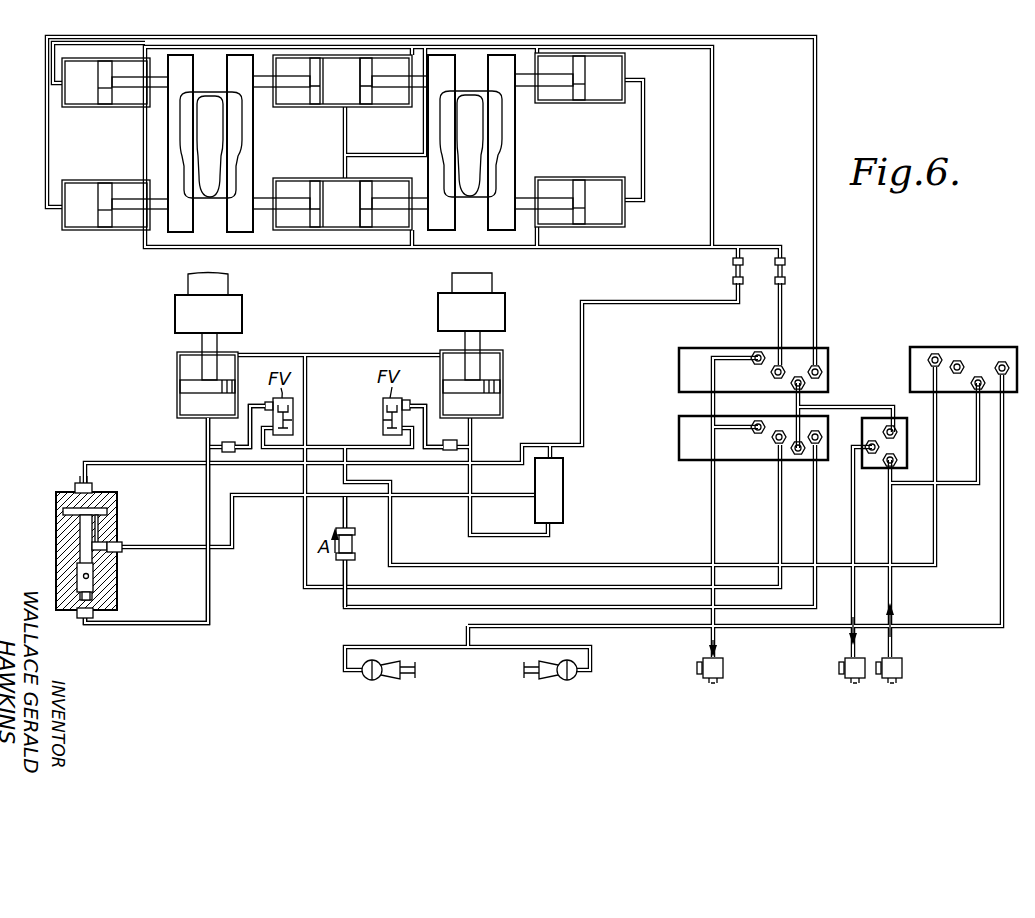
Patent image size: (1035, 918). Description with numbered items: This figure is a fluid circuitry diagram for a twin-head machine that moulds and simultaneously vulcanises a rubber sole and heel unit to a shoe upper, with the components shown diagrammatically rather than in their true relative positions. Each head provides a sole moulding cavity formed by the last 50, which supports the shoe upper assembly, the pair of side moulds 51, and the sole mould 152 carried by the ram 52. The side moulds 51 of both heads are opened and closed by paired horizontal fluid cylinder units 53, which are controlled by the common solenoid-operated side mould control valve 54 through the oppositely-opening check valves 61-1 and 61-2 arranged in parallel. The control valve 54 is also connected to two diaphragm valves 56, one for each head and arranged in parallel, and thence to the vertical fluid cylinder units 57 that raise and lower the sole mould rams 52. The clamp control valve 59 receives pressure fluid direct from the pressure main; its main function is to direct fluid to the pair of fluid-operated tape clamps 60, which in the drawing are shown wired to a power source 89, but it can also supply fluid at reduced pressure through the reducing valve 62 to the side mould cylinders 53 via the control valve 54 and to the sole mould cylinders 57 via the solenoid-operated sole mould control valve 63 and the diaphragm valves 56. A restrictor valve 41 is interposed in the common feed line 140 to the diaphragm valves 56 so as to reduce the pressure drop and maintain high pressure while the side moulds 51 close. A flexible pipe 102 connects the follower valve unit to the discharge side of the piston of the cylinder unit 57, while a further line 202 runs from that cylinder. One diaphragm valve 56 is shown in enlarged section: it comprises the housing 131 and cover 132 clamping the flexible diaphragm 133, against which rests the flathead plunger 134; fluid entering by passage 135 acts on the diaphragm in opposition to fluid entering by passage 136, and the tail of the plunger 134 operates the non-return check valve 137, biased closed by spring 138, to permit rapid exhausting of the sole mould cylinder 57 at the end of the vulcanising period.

The last 50 is at (341, 144).
The side moulds 51 is at (240, 219).
The horizontal fluid cylinder units 53 is at (114, 108).
The sole mould 152 is at (217, 285).
The ram 52 is at (340, 336).
The vertical fluid cylinder units 57 is at (177, 367).
The flexible pipe 102 is at (249, 404).
The fluid line 202 is at (206, 460).
The common feed line 140 is at (343, 515).
The restrictor valve 41 is at (353, 541).
The diaphragm valves 56 is at (310, 553).
The cover 132 is at (56, 500).
The flexible diaphragm 133 is at (62, 510).
The flathead plunger 134 is at (100, 523).
The passage 135 is at (106, 553).
The passage 136 is at (79, 490).
The non-return check valve 137 is at (78, 579).
The spring 138 is at (94, 598).
The housing 131 is at (58, 600).
The check valve 61-1 is at (733, 271).
The check valve 61-2 is at (784, 264).
The side mould control valve 54 is at (679, 364).
The sole mould control valve 63 is at (679, 434).
The clamp control valve 59 is at (910, 361).
The reducing valve 62 is at (870, 462).
The fluid-operated tape clamps 60 is at (362, 673).
The power source 89 is at (510, 672).